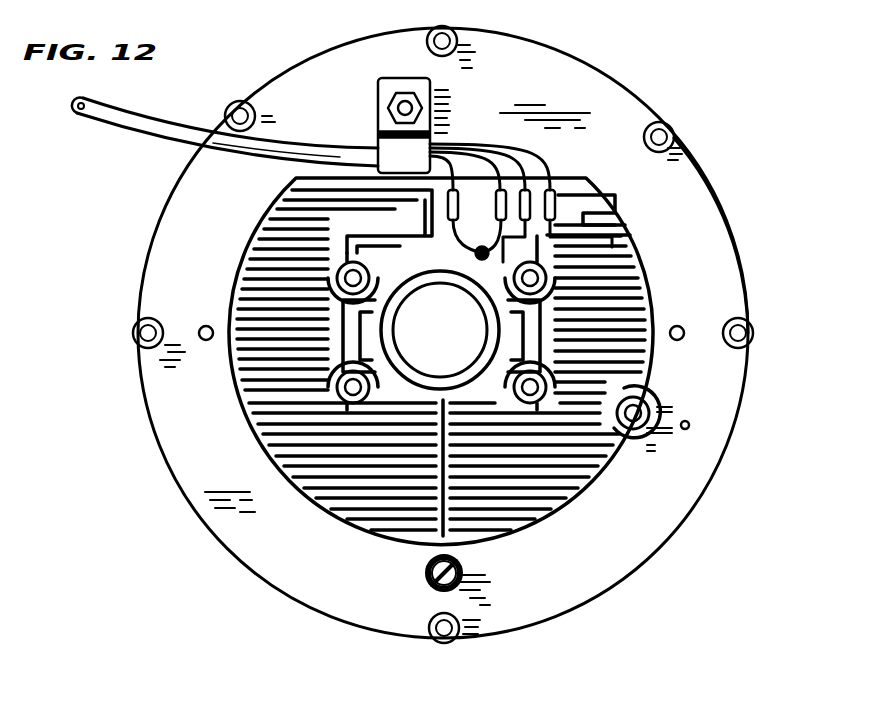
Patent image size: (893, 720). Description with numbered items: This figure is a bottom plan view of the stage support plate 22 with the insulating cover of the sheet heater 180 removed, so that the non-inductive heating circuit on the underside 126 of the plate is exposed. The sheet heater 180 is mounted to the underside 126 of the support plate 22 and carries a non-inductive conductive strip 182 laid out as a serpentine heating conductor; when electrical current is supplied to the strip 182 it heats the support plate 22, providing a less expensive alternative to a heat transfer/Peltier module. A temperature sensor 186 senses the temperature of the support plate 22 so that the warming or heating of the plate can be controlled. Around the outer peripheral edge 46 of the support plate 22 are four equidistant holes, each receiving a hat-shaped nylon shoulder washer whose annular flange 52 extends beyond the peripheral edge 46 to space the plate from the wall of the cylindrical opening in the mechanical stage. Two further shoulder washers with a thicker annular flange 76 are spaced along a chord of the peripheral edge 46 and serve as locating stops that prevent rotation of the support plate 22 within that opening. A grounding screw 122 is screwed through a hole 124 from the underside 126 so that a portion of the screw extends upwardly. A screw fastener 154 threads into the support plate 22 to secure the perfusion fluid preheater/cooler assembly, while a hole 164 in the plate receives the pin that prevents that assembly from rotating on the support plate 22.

The stage support plate 22 is at (633, 93).
The outer peripheral edge 46 is at (730, 224).
The annular flange 52 is at (452, 27).
The thicker annular flange 76 is at (228, 101).
The grounding screw 122 is at (461, 577).
The hole 124 is at (424, 590).
The underside 126 is at (700, 263).
The screw fastener 154 is at (634, 414).
The hole 164 is at (693, 425).
The sheet heater 180 is at (251, 442).
The non-inductive conductive strip 182 is at (243, 367).
The temperature sensor 186 is at (489, 253).